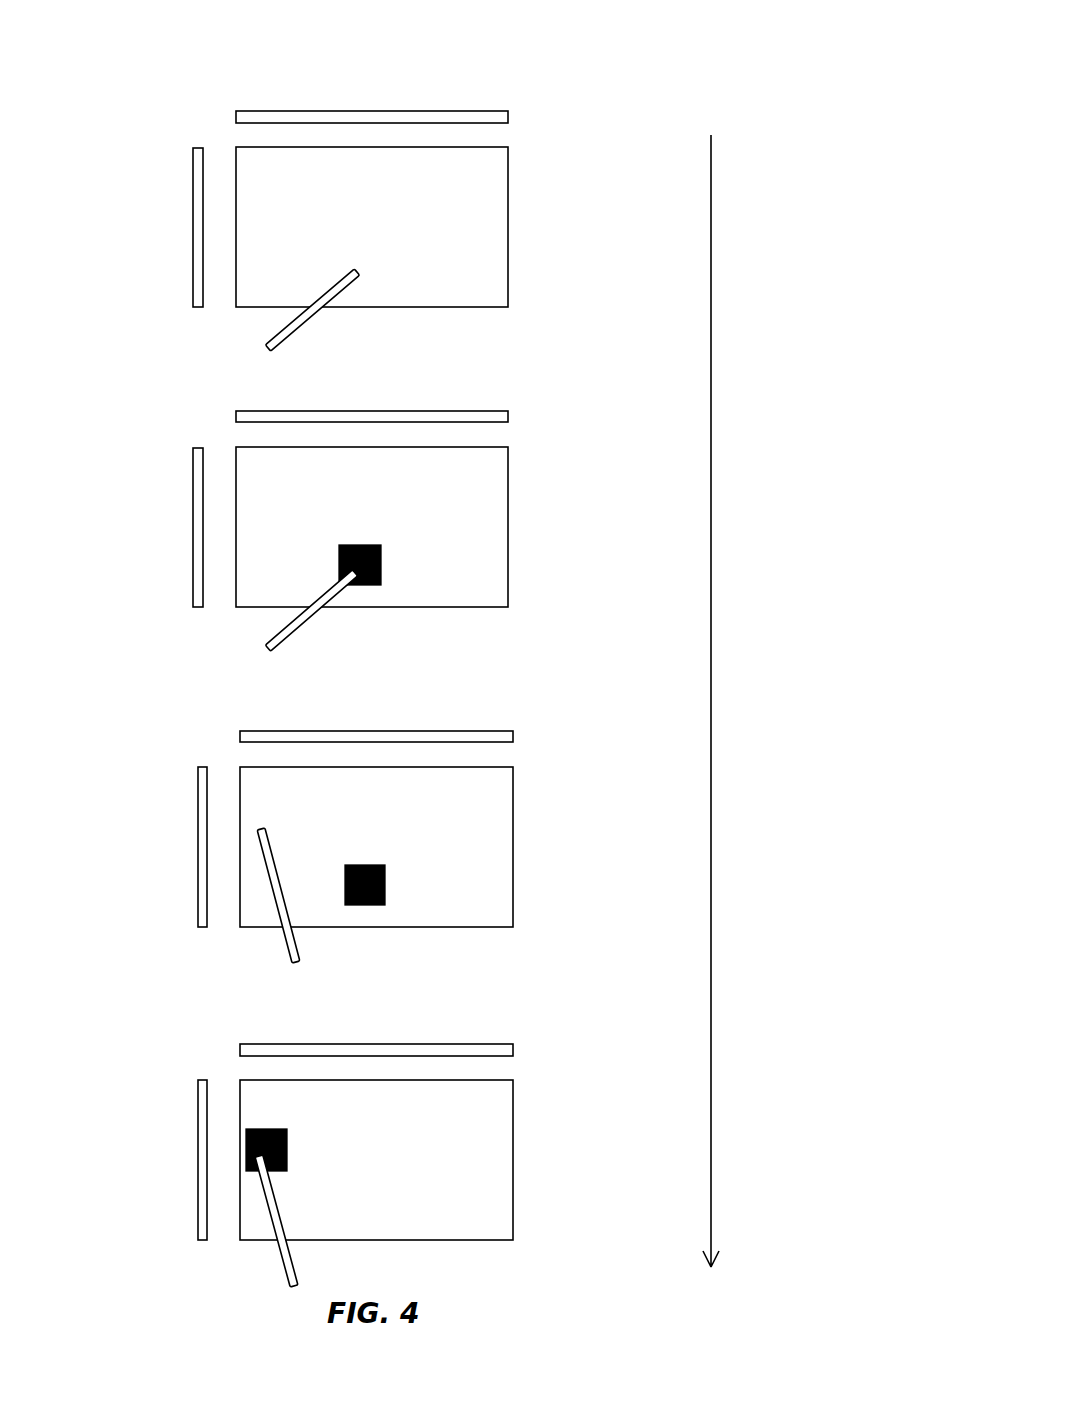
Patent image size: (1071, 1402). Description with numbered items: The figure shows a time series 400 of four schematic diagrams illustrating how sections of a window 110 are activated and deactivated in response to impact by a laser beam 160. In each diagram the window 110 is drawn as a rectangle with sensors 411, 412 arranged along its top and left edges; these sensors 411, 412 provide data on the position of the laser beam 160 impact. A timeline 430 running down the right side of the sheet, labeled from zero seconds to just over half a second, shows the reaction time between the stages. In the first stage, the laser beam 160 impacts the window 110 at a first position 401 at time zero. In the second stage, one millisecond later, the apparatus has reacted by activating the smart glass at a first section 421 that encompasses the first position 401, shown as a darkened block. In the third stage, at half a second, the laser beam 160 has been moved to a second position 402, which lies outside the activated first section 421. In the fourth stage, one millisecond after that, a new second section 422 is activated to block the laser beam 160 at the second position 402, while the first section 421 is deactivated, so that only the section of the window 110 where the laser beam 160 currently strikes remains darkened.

The time series 400 is at (621, 63).
The window 110 is at (248, 163).
The sensor 411 is at (267, 119).
The sensor 412 is at (195, 193).
The first position 401 is at (357, 273).
The second position 402 is at (260, 830).
The first section 421 is at (339, 550).
The second section 422 is at (245, 1145).
The laser beam 160 is at (216, 750).
The timeline 430 is at (711, 276).